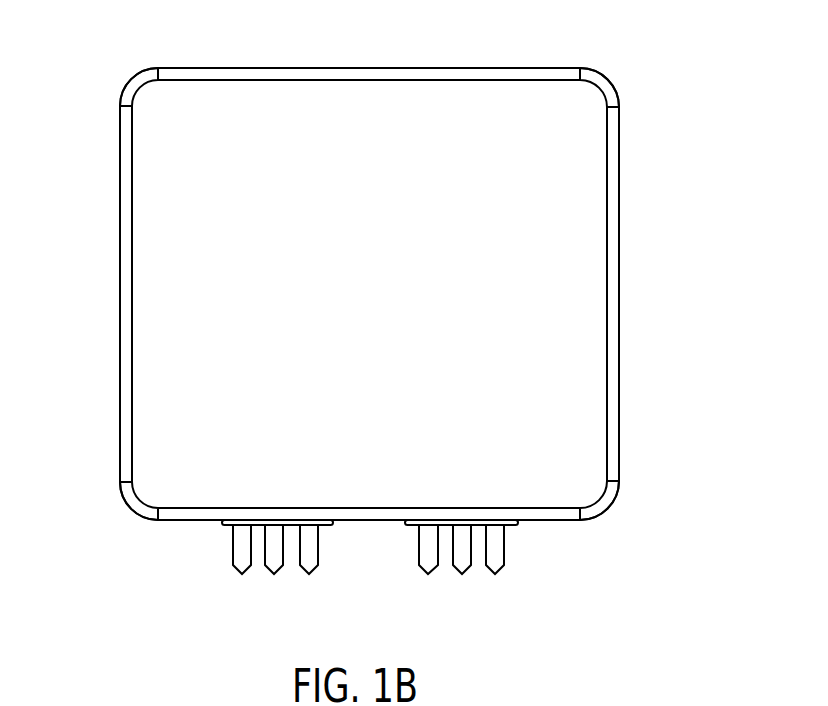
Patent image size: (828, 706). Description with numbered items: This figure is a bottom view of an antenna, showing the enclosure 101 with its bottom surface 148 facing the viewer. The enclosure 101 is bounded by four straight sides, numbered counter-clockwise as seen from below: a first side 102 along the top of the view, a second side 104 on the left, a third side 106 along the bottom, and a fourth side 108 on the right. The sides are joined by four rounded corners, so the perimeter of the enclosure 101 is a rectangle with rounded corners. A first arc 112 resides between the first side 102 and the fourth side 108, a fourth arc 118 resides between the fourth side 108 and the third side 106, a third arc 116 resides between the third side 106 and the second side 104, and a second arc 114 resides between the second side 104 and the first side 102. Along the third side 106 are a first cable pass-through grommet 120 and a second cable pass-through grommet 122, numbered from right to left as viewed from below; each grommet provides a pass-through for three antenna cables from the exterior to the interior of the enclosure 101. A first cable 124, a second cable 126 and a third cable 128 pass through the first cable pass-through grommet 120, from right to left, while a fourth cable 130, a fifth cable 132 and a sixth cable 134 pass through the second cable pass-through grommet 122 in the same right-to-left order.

The enclosure 101 is at (120, 210).
The first side 102 is at (324, 68).
The second side 104 is at (120, 322).
The third side 106 is at (185, 522).
The fourth side 108 is at (612, 300).
The first arc 112 is at (612, 78).
The second arc 114 is at (123, 80).
The third arc 116 is at (122, 503).
The fourth arc 118 is at (618, 505).
The first cable pass-through grommet 120 is at (510, 525).
The second cable pass-through grommet 122 is at (224, 525).
The first cable 124 is at (495, 574).
The second cable 126 is at (462, 574).
The third cable 128 is at (428, 574).
The fourth cable 130 is at (309, 574).
The fifth cable 132 is at (274, 574).
The sixth cable 134 is at (242, 574).
The bottom surface 148 is at (228, 86).